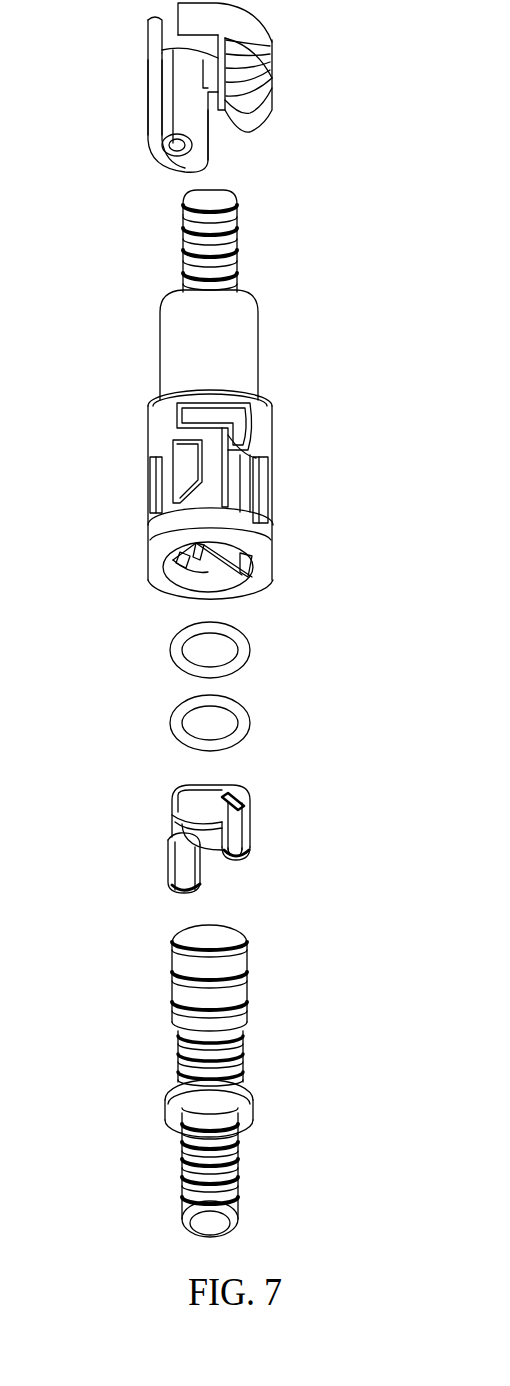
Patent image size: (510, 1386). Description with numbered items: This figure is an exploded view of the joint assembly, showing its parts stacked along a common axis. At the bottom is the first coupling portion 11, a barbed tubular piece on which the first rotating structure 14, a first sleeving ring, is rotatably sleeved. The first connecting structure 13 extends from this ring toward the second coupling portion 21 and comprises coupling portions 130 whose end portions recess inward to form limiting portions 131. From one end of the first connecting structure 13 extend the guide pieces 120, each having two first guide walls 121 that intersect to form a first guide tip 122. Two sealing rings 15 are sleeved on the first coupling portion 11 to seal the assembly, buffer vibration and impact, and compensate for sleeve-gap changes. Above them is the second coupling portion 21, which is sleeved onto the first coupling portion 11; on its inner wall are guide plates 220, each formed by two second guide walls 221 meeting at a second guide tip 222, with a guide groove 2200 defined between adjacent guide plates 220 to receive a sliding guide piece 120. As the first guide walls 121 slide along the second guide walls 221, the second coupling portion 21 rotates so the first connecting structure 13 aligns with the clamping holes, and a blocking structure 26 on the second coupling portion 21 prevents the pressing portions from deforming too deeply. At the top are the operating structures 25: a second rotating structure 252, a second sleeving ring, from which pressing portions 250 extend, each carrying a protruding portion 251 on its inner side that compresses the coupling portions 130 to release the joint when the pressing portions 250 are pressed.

The first coupling portion 11 is at (248, 1103).
The first connecting structure 13 is at (348, 815).
The coupling portions 130 is at (238, 829).
The limiting portions 131 is at (240, 863).
The first rotating structure 14 is at (190, 807).
The guide pieces 120 is at (348, 732).
The first guide walls 121 is at (247, 800).
The first guide tip 122 is at (240, 793).
The sealing rings 15 is at (240, 663).
The second coupling portion 21 is at (247, 331).
The blocking structure 26 is at (242, 430).
The guide plates 220 is at (369, 552).
The second guide walls 221 is at (252, 573).
The second guide tip 222 is at (199, 548).
The guide groove 2200 is at (182, 582).
The operating structures 25 is at (291, 68).
The pressing portions 250 is at (266, 64).
The protruding portions 251 is at (176, 158).
The second rotating structure 252 is at (240, 22).